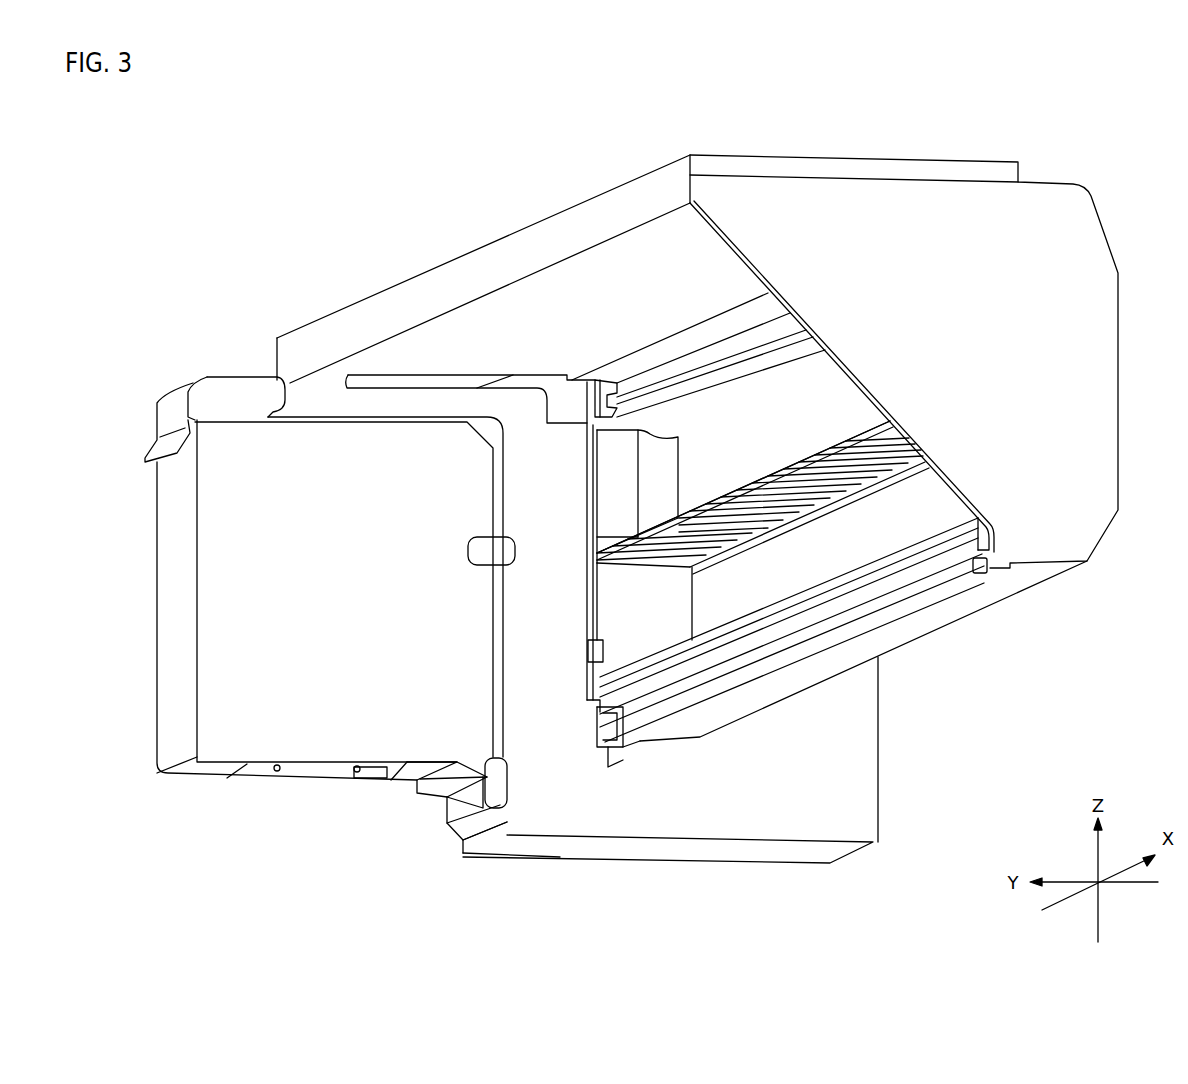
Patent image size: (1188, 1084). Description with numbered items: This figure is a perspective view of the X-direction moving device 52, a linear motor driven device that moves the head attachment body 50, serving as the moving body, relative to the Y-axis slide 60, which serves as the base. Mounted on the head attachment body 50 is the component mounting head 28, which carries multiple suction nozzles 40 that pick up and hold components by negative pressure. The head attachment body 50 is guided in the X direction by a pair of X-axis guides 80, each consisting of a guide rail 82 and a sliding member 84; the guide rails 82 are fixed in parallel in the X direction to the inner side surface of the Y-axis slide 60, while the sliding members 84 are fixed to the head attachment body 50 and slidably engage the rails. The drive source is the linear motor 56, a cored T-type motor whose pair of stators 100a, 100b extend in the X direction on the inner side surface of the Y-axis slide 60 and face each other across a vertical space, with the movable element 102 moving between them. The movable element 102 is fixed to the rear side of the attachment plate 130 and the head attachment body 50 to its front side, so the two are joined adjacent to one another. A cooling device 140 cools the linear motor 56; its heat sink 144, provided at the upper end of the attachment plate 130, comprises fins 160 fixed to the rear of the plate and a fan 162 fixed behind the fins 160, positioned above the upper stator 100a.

The component mounting head 28 is at (129, 712).
The suction nozzle 40 is at (283, 775).
The head attachment body 50 is at (655, 822).
The X-direction moving device 52 is at (948, 696).
The linear motor 56 is at (973, 485).
The Y-axis slide 60 is at (1050, 202).
The X-axis guide 80 is at (705, 300).
The guide rail 82 is at (762, 328).
The sliding member 84 is at (602, 377).
The stator 100a is at (859, 428).
The stator 100b is at (927, 508).
The movable element 102 is at (675, 603).
The attachment plate 130 is at (595, 608).
The cooling device 140 is at (703, 422).
The heat sink 144 is at (740, 432).
The fins 160 is at (623, 481).
The fan 162 is at (670, 454).